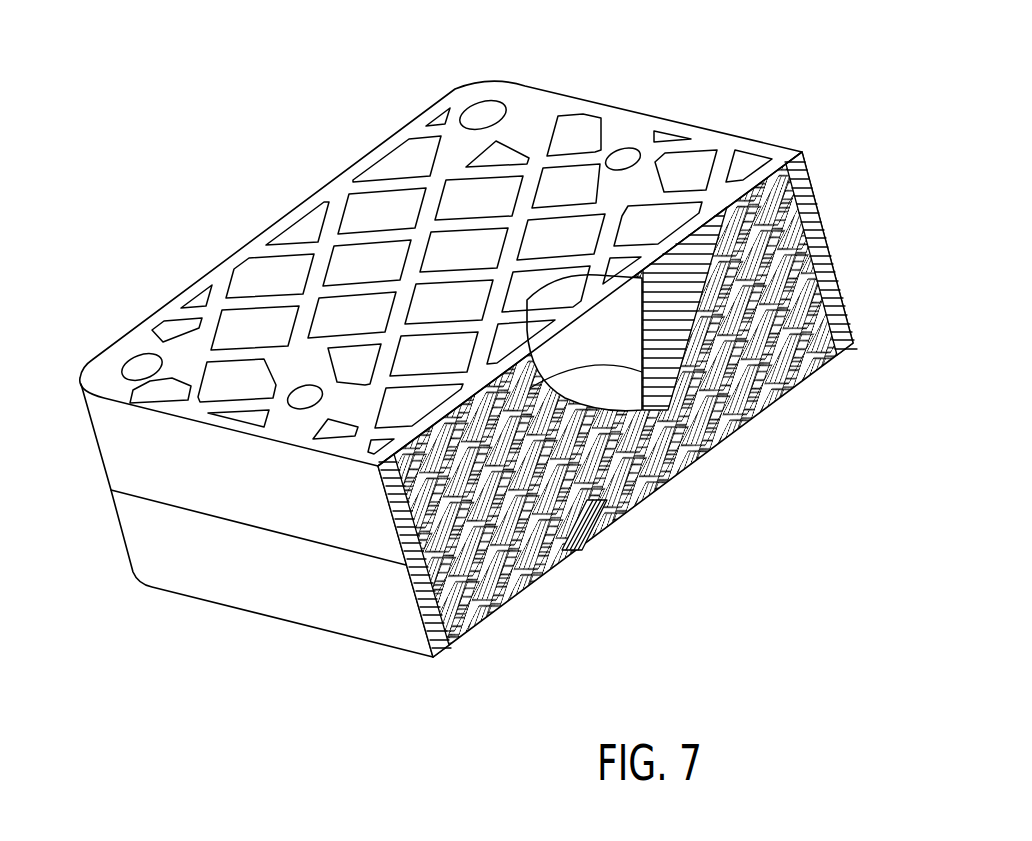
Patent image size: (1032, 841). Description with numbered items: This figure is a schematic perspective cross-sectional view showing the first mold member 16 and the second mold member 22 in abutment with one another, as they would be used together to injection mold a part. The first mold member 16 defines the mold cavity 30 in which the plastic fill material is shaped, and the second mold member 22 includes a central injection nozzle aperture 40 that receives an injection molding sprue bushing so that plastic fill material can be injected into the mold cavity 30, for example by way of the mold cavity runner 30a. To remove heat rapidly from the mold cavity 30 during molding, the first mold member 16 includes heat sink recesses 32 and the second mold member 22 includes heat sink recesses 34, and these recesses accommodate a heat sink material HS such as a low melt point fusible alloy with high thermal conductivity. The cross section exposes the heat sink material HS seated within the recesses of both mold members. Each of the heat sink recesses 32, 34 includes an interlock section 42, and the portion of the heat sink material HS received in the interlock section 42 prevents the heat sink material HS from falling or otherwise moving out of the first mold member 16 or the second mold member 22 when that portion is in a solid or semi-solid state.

The first mold member 16 is at (287, 592).
The second mold member 22 is at (123, 445).
The mold cavity 30 is at (790, 337).
The mold cavity runner 30a is at (620, 403).
The heat sink recesses 32 is at (587, 507).
The heat sink recesses 34 is at (307, 212).
The central injection nozzle aperture 40 is at (553, 307).
The interlock section 42 is at (817, 204).
The heat sink material HS is at (332, 453).